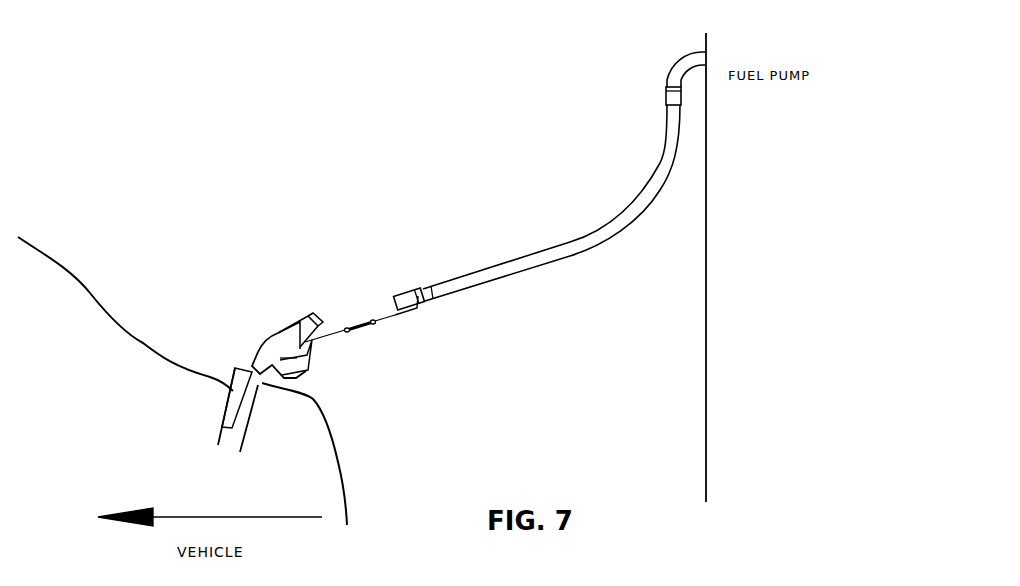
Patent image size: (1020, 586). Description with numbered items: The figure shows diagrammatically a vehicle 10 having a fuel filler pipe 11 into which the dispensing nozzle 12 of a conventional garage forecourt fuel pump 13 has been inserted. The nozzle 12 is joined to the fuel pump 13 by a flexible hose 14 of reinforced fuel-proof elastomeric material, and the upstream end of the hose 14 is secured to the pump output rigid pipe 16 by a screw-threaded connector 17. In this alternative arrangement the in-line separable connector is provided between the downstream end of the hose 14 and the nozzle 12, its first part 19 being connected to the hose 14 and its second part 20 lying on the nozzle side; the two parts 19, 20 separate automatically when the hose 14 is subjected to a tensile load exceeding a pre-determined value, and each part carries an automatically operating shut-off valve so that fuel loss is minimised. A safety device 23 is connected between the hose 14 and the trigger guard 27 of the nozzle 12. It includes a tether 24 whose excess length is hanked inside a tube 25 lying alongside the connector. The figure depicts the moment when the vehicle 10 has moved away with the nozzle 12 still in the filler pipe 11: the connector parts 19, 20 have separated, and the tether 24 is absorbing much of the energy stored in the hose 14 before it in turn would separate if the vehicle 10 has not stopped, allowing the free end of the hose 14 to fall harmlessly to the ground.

The vehicle 10 is at (85, 308).
The fuel filler pipe 11 is at (231, 391).
The dispensing nozzle 12 is at (283, 337).
The fuel pump 13 is at (717, 323).
The flexible hose 14 is at (522, 253).
The pump output rigid pipe 16 is at (673, 68).
The screw-threaded connector 17 is at (666, 98).
The first part of connector 19 is at (413, 288).
The second part of connector 20 is at (305, 317).
The safety device 23 is at (359, 308).
The tether 24 is at (395, 320).
The tube 25 is at (362, 332).
The trigger guard 27 is at (320, 367).